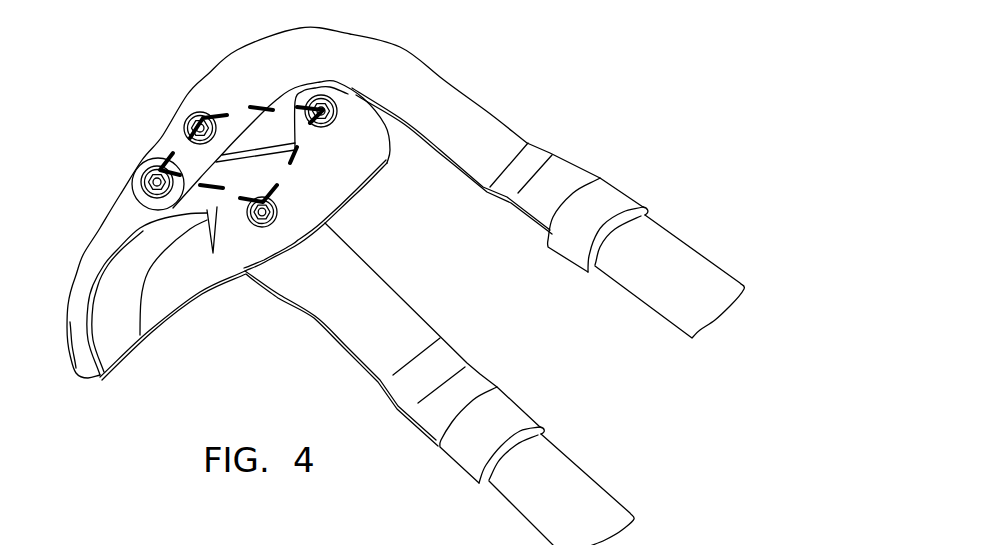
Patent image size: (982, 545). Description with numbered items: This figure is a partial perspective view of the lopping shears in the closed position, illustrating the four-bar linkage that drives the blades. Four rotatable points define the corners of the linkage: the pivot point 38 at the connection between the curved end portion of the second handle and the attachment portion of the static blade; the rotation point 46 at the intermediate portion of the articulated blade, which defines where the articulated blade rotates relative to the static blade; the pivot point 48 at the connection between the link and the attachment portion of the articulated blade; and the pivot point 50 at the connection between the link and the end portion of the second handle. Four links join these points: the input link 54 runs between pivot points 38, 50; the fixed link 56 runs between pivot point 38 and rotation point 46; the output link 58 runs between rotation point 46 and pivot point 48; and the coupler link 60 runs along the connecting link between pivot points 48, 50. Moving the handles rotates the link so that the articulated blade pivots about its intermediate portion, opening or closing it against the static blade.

The pivot point 38 is at (150, 180).
The rotation point 46 is at (262, 222).
The pivot point 48 is at (330, 107).
The pivot point 50 is at (195, 122).
The input link 54 is at (160, 155).
The fixed link 56 is at (210, 215).
The output link 58 is at (297, 163).
The coupler link 60 is at (220, 112).